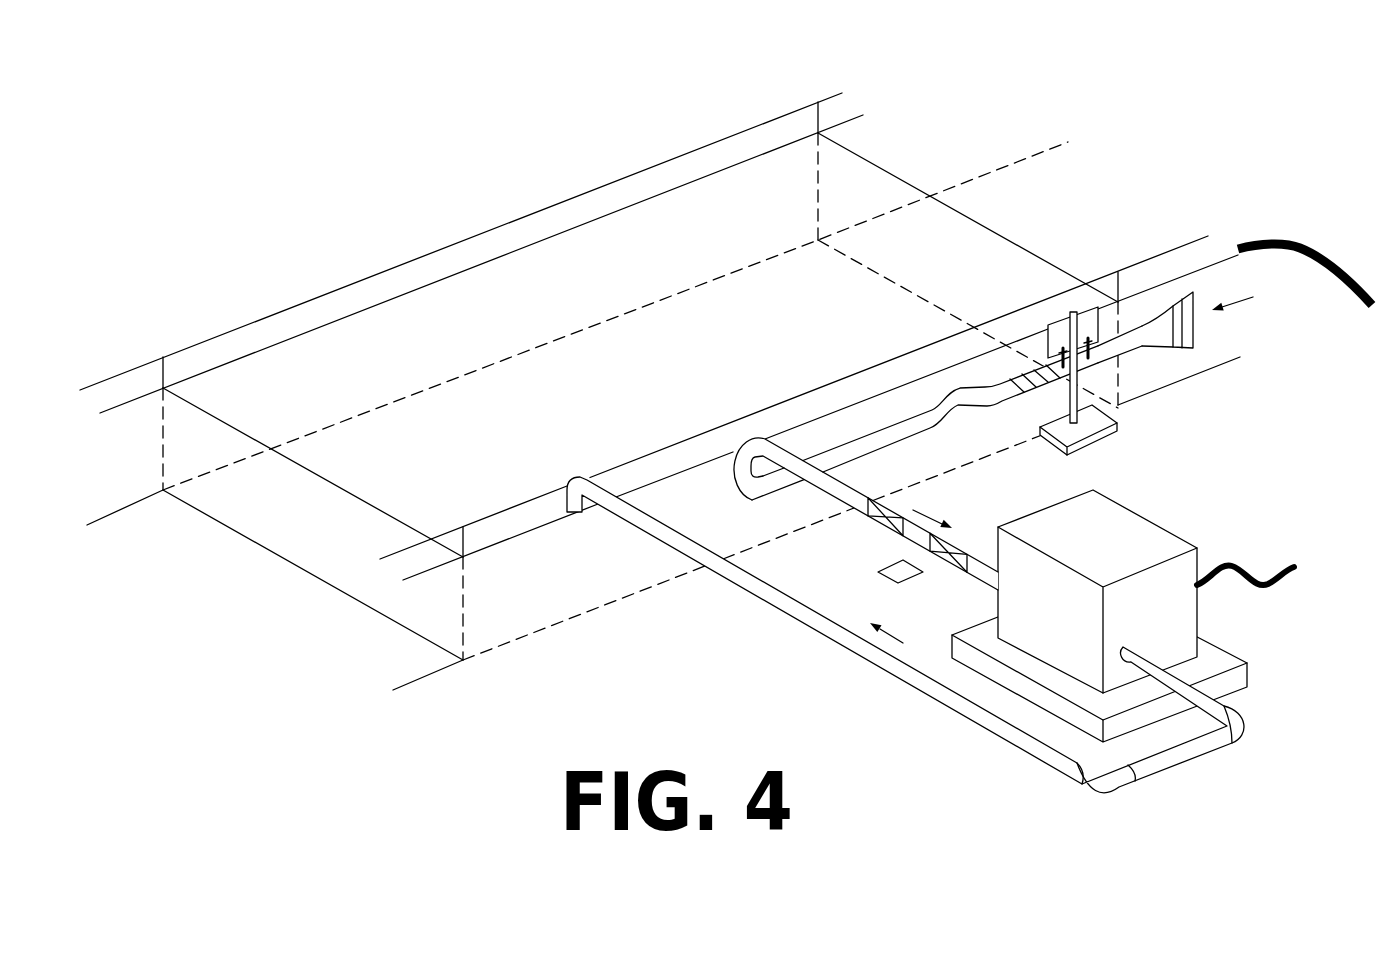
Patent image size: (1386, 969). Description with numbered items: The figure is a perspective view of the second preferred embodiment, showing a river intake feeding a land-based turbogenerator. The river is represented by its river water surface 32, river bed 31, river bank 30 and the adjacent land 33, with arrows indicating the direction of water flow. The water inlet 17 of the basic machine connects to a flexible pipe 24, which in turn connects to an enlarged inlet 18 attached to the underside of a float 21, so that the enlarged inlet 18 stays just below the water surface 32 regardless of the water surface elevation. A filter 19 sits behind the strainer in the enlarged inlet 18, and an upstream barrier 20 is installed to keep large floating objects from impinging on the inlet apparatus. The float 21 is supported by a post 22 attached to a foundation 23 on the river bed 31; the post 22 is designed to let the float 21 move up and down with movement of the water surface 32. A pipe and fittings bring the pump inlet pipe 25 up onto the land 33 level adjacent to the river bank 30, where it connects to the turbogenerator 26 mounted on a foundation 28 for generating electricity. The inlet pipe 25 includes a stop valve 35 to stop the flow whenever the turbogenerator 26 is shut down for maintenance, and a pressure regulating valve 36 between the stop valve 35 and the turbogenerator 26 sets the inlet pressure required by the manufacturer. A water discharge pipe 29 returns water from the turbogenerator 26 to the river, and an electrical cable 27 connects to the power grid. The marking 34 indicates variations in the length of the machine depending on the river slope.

The water inlet 17 is at (1198, 300).
The enlarged inlet 18 is at (1188, 349).
The filter 19 is at (1160, 349).
The upstream barrier 20 is at (1293, 243).
The float 21 is at (1047, 335).
The post 22 is at (1068, 398).
The foundation 23 is at (1118, 437).
The flexible pipe 24 is at (1018, 376).
The pump inlet pipe 25 is at (826, 492).
The turbogenerator 26 is at (1147, 521).
The electrical cable 27 is at (1240, 566).
The foundation 28 is at (1250, 668).
The water discharge pipe 29 is at (570, 480).
The river bank 30 is at (817, 186).
The river bed 31 is at (918, 293).
The water surface 32 is at (400, 296).
The land 33 is at (380, 271).
The variations in length of machine 34 is at (962, 409).
The stop valve 35 is at (869, 522).
The pressure regulating valve 36 is at (878, 573).